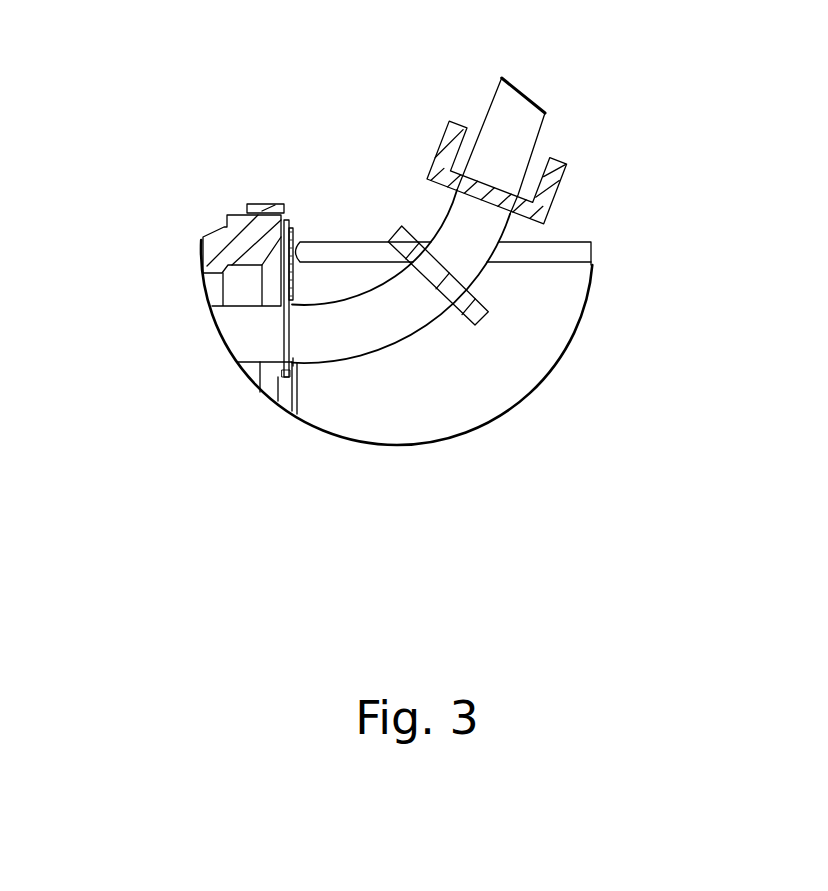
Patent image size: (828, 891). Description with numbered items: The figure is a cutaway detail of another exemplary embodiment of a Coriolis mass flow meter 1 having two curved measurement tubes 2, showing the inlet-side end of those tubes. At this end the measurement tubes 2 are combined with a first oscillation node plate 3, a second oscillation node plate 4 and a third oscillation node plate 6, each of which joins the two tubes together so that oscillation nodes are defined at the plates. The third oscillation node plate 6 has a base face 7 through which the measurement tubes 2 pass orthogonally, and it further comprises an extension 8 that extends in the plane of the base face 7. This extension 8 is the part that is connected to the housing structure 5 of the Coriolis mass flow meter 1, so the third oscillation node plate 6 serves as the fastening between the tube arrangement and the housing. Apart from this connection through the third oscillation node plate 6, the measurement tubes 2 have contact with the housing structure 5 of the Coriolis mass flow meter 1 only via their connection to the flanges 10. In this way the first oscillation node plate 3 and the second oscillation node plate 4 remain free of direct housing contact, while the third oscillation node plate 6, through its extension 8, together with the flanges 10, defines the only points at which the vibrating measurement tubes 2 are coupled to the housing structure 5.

The Coriolis mass flow meter 1 is at (246, 150).
The measurement tubes 2 is at (527, 128).
The first oscillation node plate 3 is at (543, 208).
The second oscillation node plate 4 is at (488, 315).
The housing structure 5 is at (563, 257).
The third oscillation node plate 6 is at (310, 364).
The base face 7 is at (283, 343).
The extension 8 is at (297, 240).
The flanges 10 is at (217, 250).